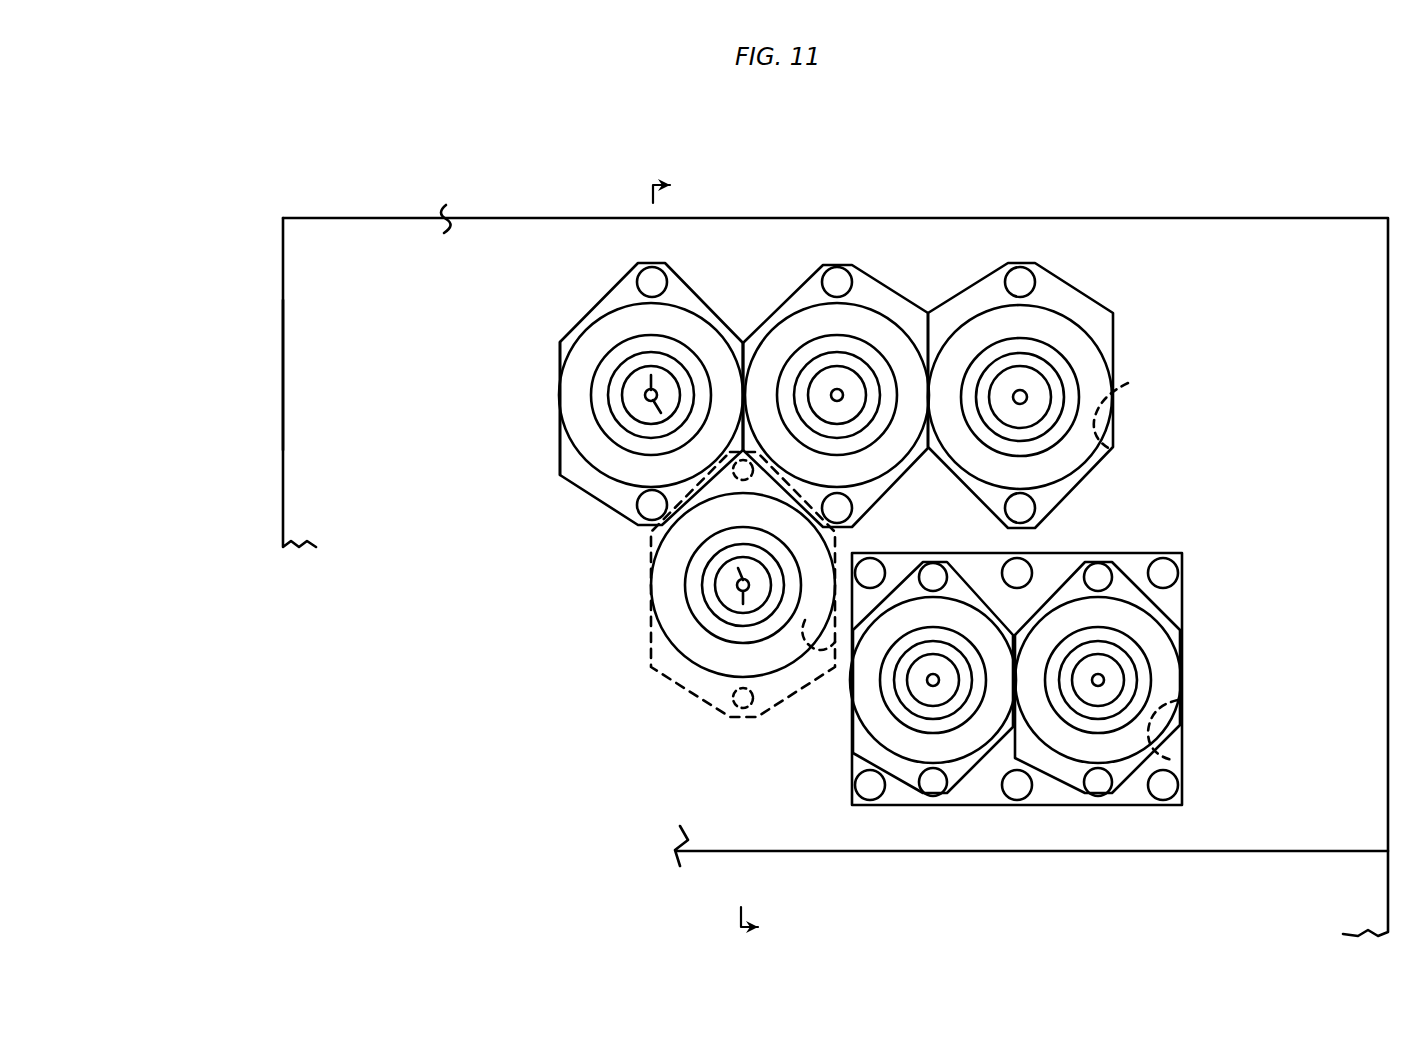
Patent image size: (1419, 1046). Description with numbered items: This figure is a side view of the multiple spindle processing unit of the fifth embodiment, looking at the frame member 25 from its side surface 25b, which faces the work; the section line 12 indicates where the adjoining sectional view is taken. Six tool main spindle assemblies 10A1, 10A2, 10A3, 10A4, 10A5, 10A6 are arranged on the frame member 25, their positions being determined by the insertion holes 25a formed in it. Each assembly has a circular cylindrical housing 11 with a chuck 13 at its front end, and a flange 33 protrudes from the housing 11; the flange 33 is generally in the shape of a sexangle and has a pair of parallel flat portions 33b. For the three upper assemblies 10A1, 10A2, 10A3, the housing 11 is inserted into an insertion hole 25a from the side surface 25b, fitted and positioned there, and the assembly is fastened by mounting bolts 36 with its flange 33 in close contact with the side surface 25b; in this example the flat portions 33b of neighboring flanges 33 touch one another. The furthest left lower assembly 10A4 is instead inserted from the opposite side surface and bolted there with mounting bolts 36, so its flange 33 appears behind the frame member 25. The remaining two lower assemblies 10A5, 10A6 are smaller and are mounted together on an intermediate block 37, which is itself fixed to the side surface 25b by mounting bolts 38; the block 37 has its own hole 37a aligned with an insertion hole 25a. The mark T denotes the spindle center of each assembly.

The frame member 25 is at (835, 555).
The insertion hole 25a is at (1114, 400).
The side surface 25b is at (298, 370).
The section line of FIG. 12 is at (726, 564).
The tool main spindle assembly 10A1 is at (855, 455).
The tool main spindle assembly 10A2 is at (896, 284).
The tool main spindle assembly 10A3 is at (1122, 320).
The tool main spindle assembly 10A4 is at (668, 642).
The tool main spindle assembly 10A5 is at (974, 786).
The tool main spindle assembly 10A6 is at (1166, 746).
The housing 11 is at (632, 464).
The chuck 13 is at (624, 346).
The flange 33 is at (592, 479).
The flat portion 33b is at (560, 455).
The mounting bolt 36 is at (648, 280).
The intermediate block 37 is at (1174, 602).
The hole in adapter plate 37a is at (1176, 712).
The mounting bolt 38 is at (1162, 571).
The center conductor terminal T is at (640, 395).